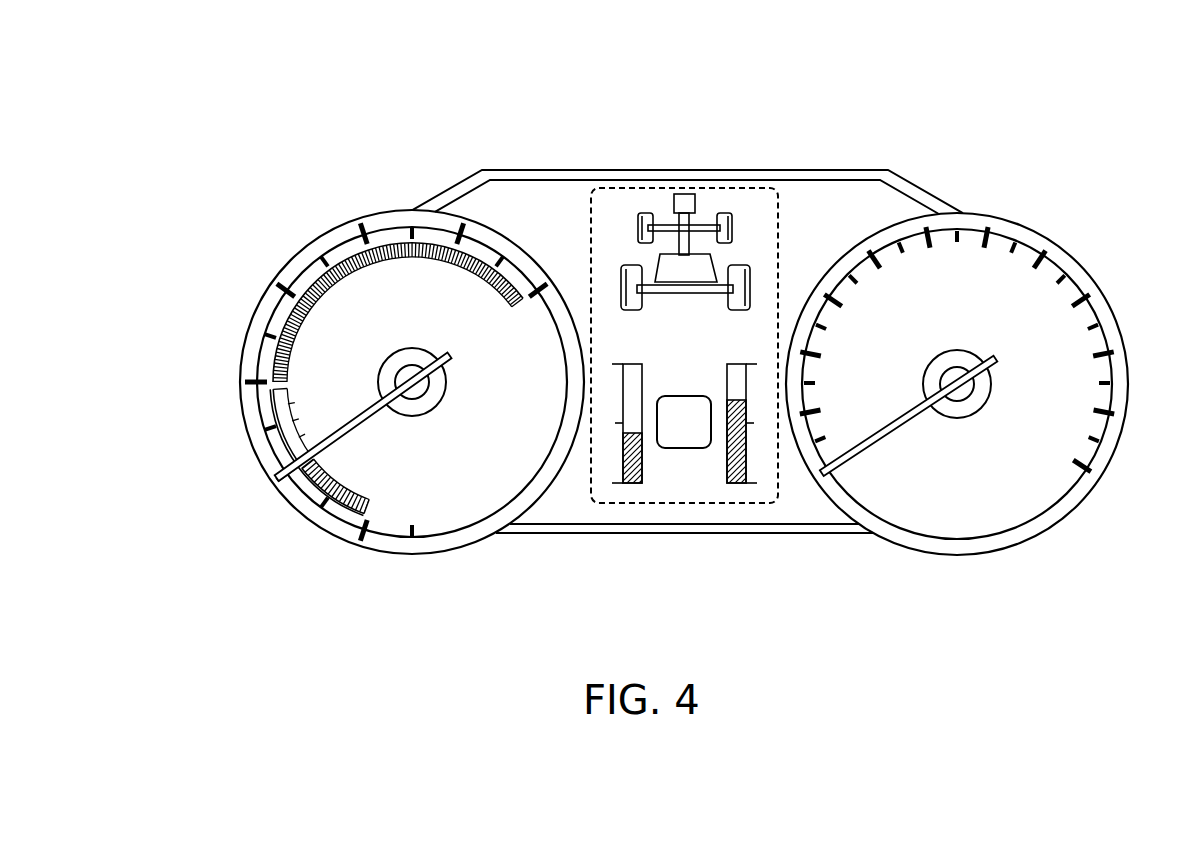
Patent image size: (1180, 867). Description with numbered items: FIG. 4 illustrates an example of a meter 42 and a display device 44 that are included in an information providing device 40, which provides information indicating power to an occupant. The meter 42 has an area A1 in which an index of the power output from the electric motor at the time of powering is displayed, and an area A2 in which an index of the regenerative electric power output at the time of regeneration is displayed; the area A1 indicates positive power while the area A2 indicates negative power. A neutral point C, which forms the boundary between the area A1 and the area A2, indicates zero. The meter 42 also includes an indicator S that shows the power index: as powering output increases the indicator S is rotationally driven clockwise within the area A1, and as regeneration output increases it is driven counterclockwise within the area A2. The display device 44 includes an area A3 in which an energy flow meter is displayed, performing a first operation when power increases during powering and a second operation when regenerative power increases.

The information providing device 40 is at (336, 77).
The meter 42 is at (455, 552).
The display device 44 is at (733, 186).
The area A1 is at (300, 392).
The area A2 is at (378, 508).
The area A3 is at (615, 250).
The neutral point C is at (310, 443).
The indicator S is at (363, 412).